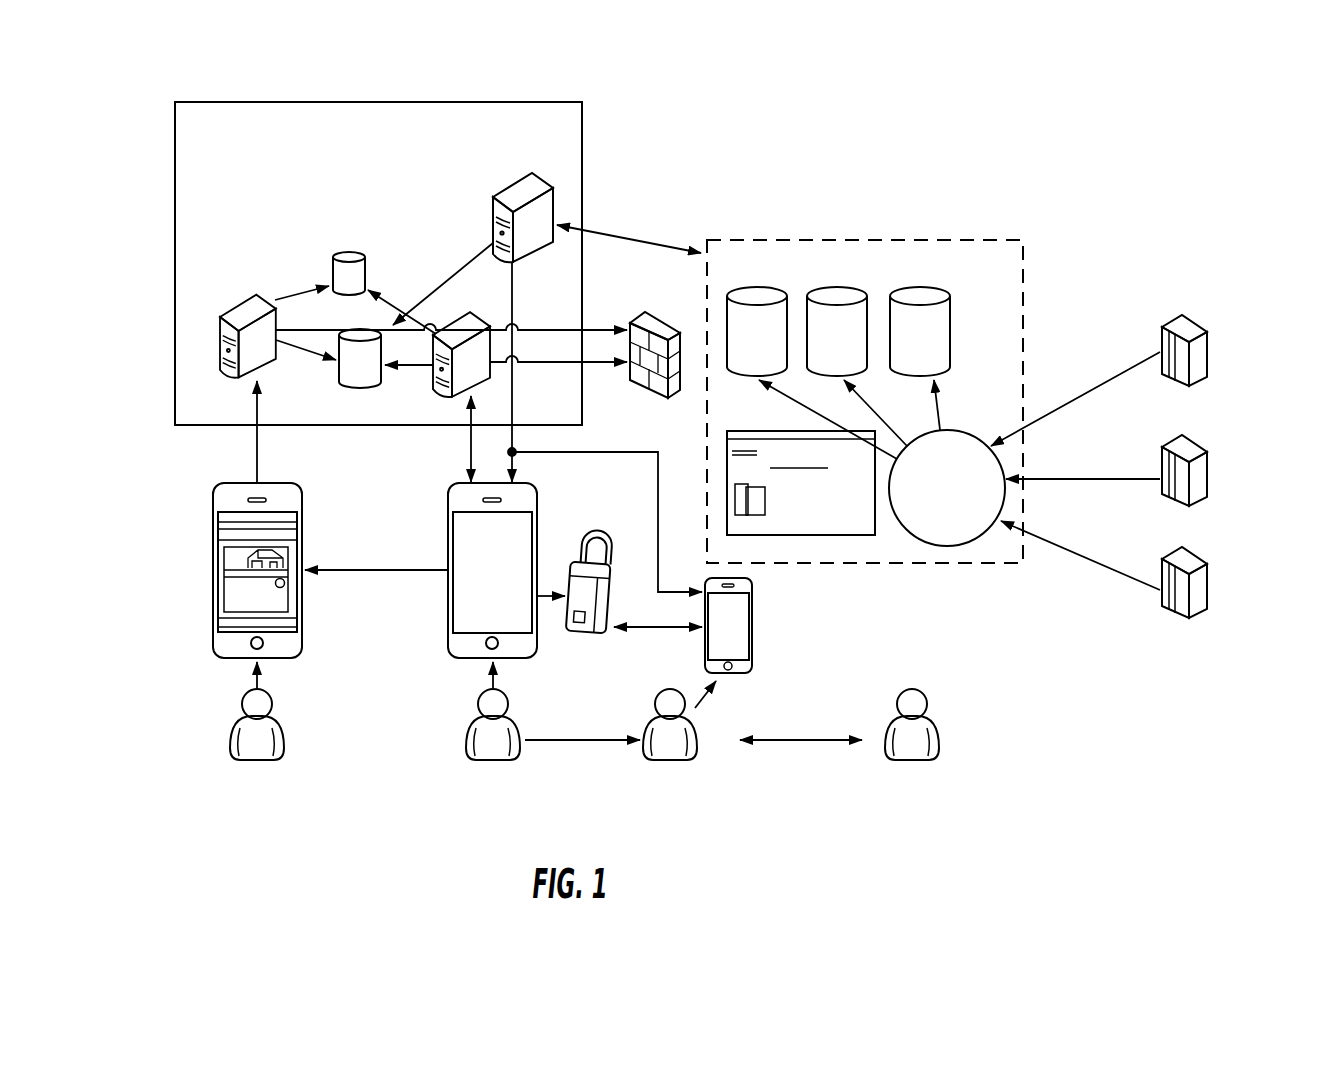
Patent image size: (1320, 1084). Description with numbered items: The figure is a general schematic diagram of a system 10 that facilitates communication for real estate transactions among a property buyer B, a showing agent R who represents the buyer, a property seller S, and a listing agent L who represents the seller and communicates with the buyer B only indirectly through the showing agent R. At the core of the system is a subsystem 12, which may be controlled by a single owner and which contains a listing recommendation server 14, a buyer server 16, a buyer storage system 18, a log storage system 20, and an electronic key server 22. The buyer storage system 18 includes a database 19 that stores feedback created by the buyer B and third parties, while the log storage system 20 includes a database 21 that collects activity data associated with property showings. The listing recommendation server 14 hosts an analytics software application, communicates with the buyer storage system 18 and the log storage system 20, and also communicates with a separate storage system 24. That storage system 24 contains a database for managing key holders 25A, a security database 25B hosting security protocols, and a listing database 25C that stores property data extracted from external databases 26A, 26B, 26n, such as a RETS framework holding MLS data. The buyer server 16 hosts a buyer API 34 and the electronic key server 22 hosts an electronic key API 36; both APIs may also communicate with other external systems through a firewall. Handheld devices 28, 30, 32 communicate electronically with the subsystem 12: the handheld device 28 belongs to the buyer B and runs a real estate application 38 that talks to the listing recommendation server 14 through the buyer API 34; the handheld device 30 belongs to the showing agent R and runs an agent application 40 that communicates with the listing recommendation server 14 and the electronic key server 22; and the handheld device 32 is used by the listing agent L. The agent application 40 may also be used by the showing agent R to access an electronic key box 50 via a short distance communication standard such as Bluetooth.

The system 10 is at (1111, 191).
The subsystem 12 is at (587, 196).
The listing recommendation server 14 is at (546, 234).
The buyer server 16 is at (249, 309).
The buyer storage system 18 is at (345, 372).
The database 19 is at (373, 378).
The log storage system 20 is at (350, 252).
The database 21 is at (339, 293).
The electronic key server 22 is at (438, 378).
The storage system 24 is at (943, 238).
The database for managing key holders 25A is at (757, 331).
The security database 25B is at (837, 331).
The listing database 25C is at (920, 331).
The external database 26A is at (1190, 329).
The external database 26B is at (1200, 475).
The external database 26n is at (1200, 594).
The handheld device 28 is at (208, 602).
The handheld device 30 is at (447, 600).
The handheld device 32 is at (735, 632).
The buyer application program interface 34 is at (271, 357).
The electronic key API 36 is at (486, 377).
The real estate application 38 is at (242, 598).
The agent application 40 is at (504, 584).
The electronic key box 50 is at (600, 611).
The property buyer B is at (230, 730).
The showing agent R is at (466, 730).
The listing agent L is at (697, 735).
The property seller S is at (939, 735).